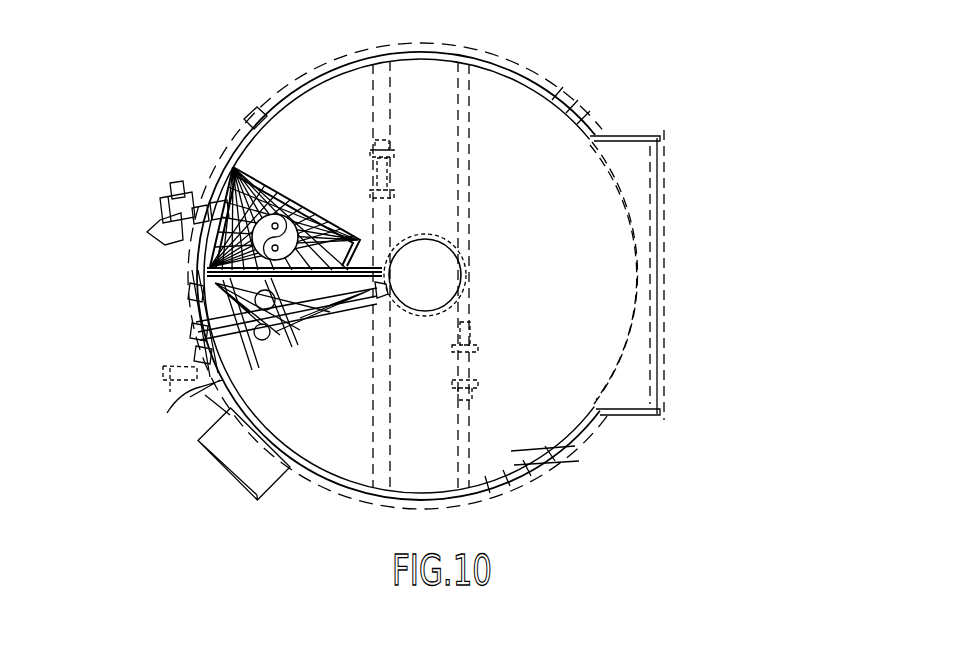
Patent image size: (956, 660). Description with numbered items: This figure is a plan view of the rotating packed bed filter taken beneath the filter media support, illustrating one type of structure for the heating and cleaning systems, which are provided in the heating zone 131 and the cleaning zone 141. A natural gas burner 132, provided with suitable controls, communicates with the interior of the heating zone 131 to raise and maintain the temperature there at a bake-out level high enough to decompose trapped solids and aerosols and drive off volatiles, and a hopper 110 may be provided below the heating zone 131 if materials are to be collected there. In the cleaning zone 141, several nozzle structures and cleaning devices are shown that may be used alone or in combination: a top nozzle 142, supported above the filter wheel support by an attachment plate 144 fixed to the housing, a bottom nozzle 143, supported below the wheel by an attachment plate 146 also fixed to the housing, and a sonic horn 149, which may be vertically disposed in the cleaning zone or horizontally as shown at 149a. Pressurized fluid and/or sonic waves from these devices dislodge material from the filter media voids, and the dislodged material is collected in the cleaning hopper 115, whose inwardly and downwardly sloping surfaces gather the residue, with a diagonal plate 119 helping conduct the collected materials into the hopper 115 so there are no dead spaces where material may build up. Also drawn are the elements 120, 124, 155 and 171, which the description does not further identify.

The hopper 110 is at (207, 244).
The hopper 115 is at (196, 348).
The diagonal plate 119 is at (378, 294).
The door / panel 120 is at (666, 252).
The housing box 124 is at (238, 455).
The heating zone 131 is at (272, 223).
The natural gas burner 132 is at (168, 194).
The cleaning zone 141 is at (284, 300).
The top nozzle structure 142 is at (190, 306).
The bottom nozzle structure 143 is at (330, 345).
The attachment plate 144 is at (193, 324).
The attachment plate 146 is at (200, 404).
The sonic horn 149 is at (255, 357).
The sonic horn (horizontal position) 149a is at (168, 392).
The central shaft 155 is at (428, 252).
The shaft bore 171 is at (468, 257).